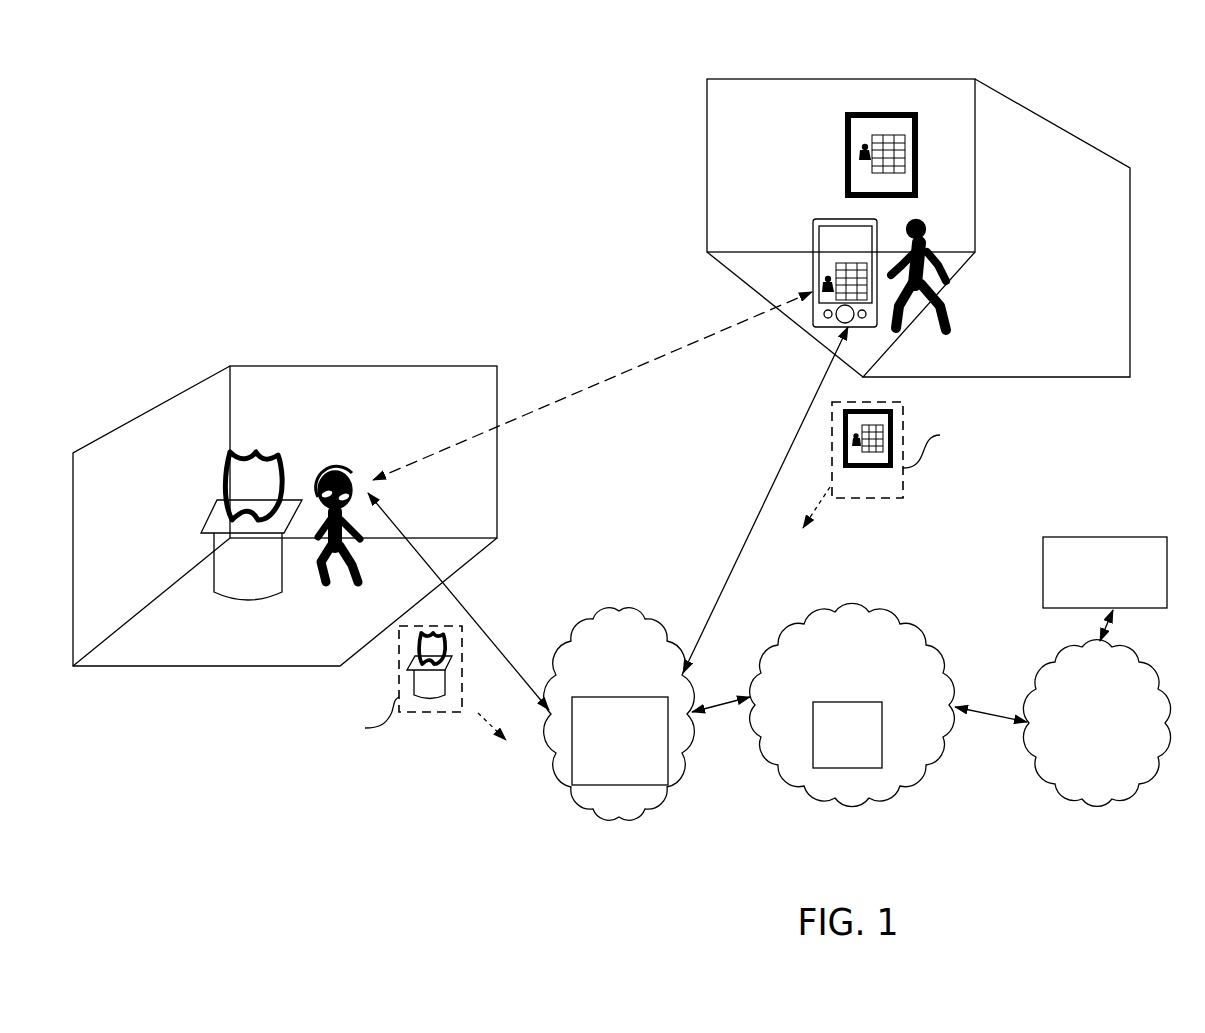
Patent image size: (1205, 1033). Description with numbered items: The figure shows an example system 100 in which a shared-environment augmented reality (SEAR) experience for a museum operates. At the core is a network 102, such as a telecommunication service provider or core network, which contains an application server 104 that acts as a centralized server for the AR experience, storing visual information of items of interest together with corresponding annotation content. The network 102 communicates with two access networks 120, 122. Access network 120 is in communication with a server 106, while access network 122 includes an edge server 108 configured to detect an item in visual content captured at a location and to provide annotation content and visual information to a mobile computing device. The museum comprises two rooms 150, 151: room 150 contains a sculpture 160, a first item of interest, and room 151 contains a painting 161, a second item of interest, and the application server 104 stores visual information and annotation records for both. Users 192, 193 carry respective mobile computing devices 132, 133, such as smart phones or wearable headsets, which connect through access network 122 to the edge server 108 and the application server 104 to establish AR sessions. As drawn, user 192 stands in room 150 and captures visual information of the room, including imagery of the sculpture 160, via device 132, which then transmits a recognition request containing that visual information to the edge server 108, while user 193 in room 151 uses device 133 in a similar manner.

The system 100 is at (124, 62).
The network 102 is at (836, 685).
The application server 104 is at (831, 758).
The server 106 is at (1088, 591).
The edge server 108 is at (603, 770).
The access network 120 is at (1080, 750).
The access network 122 is at (603, 685).
The device 132 is at (372, 475).
The device 133 is at (813, 227).
The room 150 is at (410, 365).
The room 151 is at (707, 147).
The sculpture 160 is at (260, 453).
The painting 161 is at (845, 140).
The user 192 is at (353, 587).
The user 193 is at (950, 325).